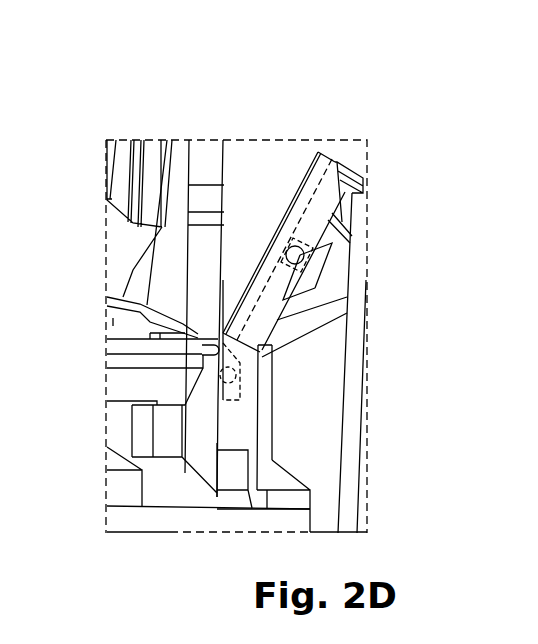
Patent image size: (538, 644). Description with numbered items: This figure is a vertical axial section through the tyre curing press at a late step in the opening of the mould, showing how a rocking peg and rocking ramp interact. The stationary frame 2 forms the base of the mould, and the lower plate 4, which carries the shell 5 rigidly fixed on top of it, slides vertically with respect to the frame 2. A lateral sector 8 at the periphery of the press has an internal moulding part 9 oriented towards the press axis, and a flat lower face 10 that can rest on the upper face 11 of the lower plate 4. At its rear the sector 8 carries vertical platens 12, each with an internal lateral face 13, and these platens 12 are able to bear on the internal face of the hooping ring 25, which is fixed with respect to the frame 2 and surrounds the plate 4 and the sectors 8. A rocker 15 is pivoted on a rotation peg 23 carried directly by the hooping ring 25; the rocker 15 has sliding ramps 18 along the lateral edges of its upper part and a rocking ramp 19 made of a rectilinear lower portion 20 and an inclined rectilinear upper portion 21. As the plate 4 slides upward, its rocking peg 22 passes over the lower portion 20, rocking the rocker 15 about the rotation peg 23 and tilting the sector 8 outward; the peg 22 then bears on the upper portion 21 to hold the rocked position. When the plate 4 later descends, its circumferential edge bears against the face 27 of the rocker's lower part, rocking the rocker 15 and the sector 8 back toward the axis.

The frame 2 is at (163, 518).
The lower plate 4 is at (140, 379).
The shell 5 is at (113, 322).
The lateral sector 8 is at (193, 124).
The moulding part 9 is at (115, 175).
The flat lower face 10 is at (200, 352).
The upper face 11 is at (194, 326).
The vertical platen 12 is at (242, 163).
The internal lateral face 13 is at (269, 156).
The rocker 15 is at (317, 213).
The sliding ramp 18 is at (305, 153).
The rocking ramp 19 is at (430, 328).
The lower portion 20 is at (248, 344).
The upper portion 21 is at (259, 326).
The rocking peg 22 is at (232, 375).
The rotation peg 23 is at (304, 256).
The hooping ring 25 is at (318, 307).
The face 27 is at (207, 416).